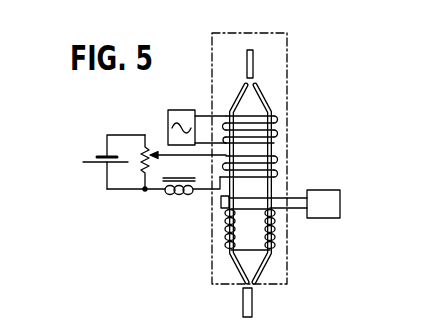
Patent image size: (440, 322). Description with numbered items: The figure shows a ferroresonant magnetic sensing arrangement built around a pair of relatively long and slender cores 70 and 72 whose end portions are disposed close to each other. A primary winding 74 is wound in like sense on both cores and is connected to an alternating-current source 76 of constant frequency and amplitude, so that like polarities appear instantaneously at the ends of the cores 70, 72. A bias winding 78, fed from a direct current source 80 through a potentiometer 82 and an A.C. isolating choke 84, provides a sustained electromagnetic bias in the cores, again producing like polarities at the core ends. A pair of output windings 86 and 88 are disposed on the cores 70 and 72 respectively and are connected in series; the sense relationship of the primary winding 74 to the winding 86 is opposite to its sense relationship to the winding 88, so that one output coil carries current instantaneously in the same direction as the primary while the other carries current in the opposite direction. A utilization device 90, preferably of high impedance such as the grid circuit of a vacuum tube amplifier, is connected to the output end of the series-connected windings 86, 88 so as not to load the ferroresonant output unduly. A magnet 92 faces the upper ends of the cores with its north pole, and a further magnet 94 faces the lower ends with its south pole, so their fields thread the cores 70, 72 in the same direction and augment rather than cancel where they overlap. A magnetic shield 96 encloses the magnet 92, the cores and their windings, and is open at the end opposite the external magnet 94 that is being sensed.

The core 70 is at (238, 94).
The core 72 is at (262, 94).
The primary winding 74 is at (277, 120).
The alternating-current source 76 is at (182, 110).
The bias winding 78 is at (277, 160).
The direct current source 80 is at (97, 157).
The potentiometer 82 is at (145, 168).
The A.C. isolating choke 84 is at (176, 191).
The output winding 86 is at (226, 222).
The output winding 88 is at (276, 228).
The utilization device 90 is at (340, 206).
The magnet 92 is at (247, 62).
The magnet 94 is at (243, 303).
The magnetic shield 96 is at (289, 51).